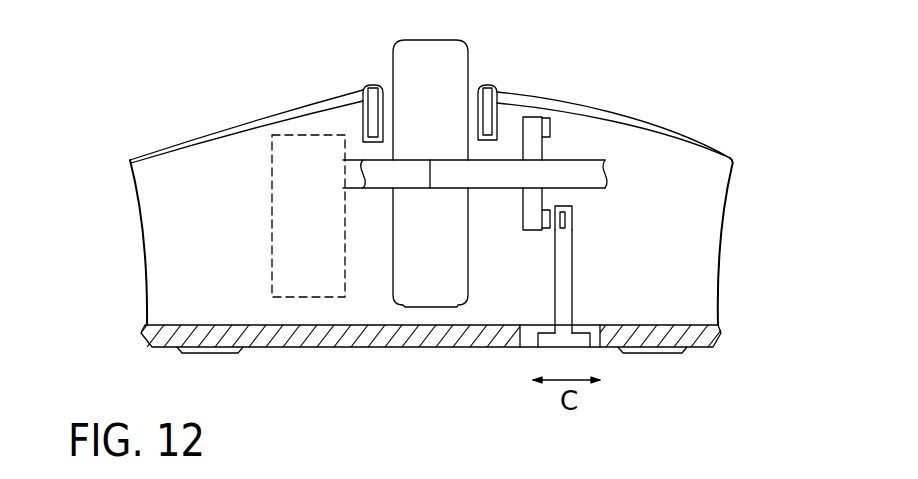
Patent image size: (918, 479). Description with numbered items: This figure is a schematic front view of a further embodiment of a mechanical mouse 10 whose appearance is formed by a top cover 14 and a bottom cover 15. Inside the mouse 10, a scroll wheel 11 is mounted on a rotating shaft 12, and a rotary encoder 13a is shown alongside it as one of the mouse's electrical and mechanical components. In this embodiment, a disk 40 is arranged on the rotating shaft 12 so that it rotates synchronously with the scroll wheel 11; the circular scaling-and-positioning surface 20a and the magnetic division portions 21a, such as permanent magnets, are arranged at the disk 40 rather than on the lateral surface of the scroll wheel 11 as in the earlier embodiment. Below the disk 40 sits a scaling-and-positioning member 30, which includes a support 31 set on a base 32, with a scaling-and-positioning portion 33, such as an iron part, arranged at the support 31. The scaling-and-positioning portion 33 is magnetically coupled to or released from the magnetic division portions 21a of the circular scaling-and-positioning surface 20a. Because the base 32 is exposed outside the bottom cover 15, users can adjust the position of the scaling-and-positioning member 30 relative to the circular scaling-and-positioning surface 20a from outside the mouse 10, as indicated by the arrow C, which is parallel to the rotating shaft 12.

The mechanical mouse 10 is at (612, 106).
The scroll wheel 11 is at (388, 43).
The rotating shaft 12 is at (583, 168).
The rotary encoder 13a is at (298, 143).
The top cover 14 is at (692, 137).
The bottom cover 15 is at (718, 333).
The circular scaling-and-positioning surface 20a is at (542, 147).
The magnetic division portions 21a is at (545, 127).
The scaling-and-positioning member 30 is at (574, 304).
The support 31 is at (567, 283).
The base 32 is at (545, 341).
The scaling-and-positioning portion 33 is at (572, 217).
The disk 40 is at (527, 117).